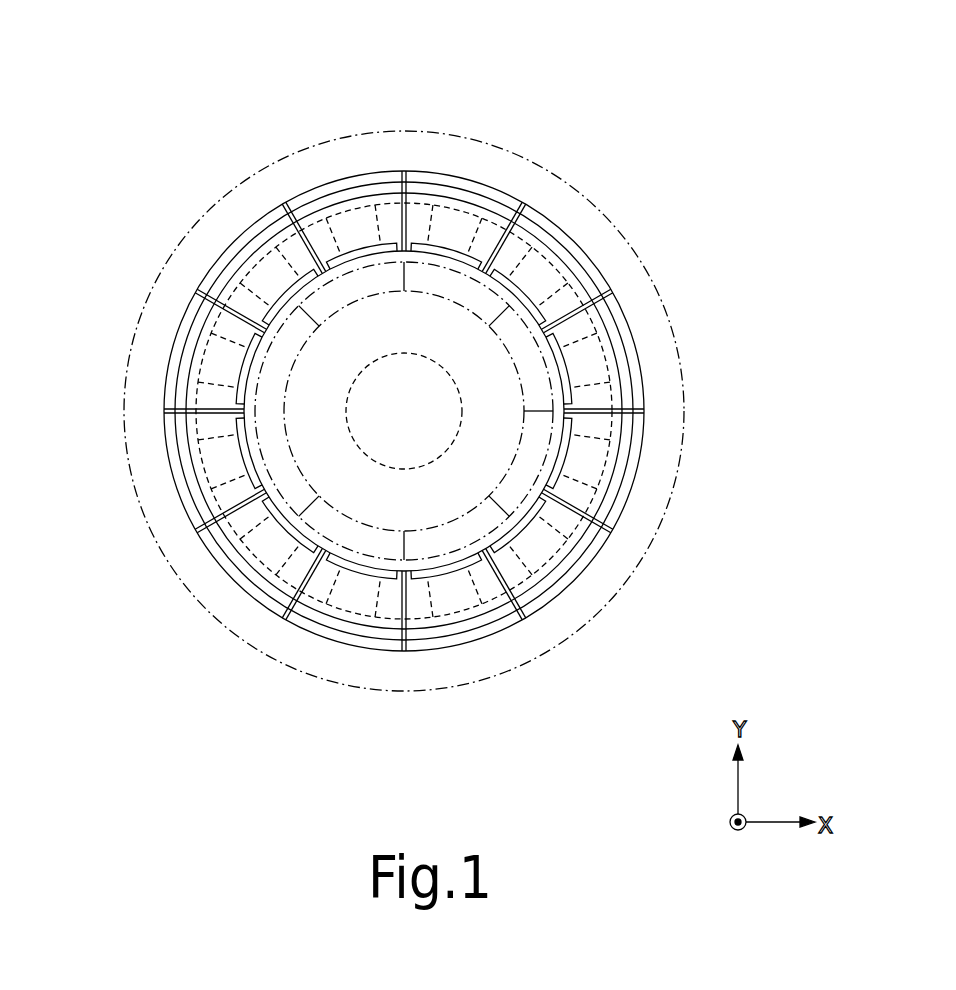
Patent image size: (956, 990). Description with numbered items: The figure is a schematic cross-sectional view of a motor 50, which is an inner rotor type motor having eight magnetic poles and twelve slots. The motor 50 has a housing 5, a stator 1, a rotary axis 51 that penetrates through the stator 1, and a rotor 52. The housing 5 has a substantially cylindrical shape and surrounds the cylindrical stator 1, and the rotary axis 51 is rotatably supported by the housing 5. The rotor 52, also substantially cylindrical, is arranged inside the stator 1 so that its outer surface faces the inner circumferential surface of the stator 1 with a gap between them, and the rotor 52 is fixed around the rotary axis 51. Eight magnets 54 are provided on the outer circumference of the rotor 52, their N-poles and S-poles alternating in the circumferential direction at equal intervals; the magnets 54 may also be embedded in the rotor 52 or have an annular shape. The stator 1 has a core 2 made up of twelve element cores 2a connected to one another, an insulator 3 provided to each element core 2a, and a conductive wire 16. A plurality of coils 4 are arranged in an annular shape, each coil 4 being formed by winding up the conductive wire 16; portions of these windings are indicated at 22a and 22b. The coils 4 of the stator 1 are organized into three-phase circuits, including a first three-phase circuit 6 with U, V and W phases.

The stator 1 is at (473, 180).
The core 2 is at (507, 195).
The element core 2a is at (335, 180).
The insulator 3 is at (618, 432).
The coil 4 is at (473, 411).
The housing 5 is at (261, 656).
The first three-phase circuit 6 is at (583, 500).
The conductive wire 16 is at (560, 302).
The coil end portion 22a is at (193, 327).
The coil side portion 22b is at (207, 310).
The motor 50 is at (545, 70).
The rotary axis 51 is at (403, 352).
The rotor 52 is at (575, 359).
The magnet 54 is at (404, 411).